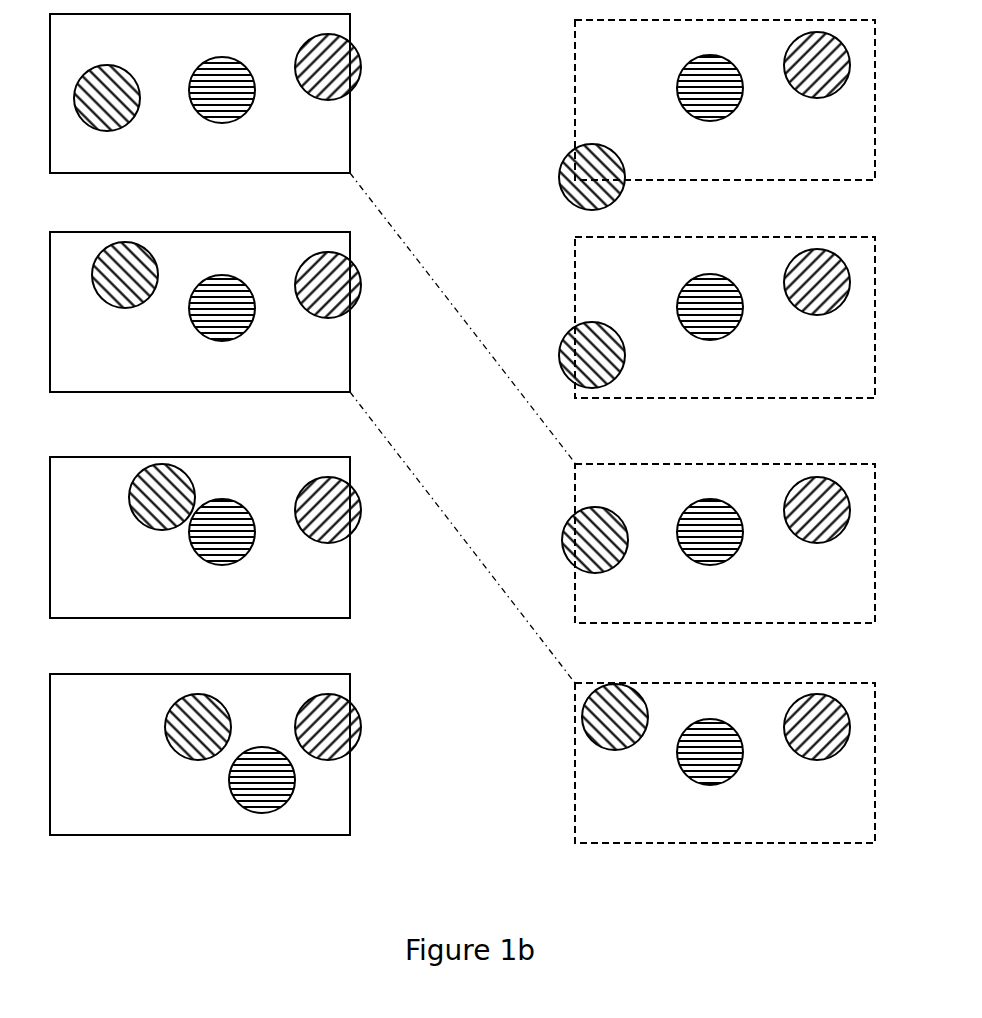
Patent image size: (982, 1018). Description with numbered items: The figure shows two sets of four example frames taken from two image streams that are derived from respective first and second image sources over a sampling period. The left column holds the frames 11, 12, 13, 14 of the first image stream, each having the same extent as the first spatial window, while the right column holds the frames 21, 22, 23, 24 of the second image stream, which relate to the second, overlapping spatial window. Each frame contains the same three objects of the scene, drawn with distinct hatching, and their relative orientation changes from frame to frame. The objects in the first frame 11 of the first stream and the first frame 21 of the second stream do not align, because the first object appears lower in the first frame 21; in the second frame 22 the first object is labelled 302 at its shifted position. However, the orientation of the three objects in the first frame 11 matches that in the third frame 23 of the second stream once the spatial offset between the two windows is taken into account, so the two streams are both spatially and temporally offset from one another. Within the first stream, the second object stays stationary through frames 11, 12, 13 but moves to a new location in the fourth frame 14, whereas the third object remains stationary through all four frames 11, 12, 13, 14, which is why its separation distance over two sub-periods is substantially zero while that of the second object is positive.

The first frame of first image stream 11 is at (350, 157).
The second frame of first image stream 12 is at (350, 377).
The third frame of first image stream 13 is at (350, 599).
The fourth frame of first image stream 14 is at (350, 815).
The first frame of second image stream 21 is at (575, 39).
The second frame of second image stream 22 is at (575, 259).
The third frame of second image stream 23 is at (575, 479).
The fourth frame of second image stream 24 is at (575, 694).
The shifted first object 302 is at (617, 324).